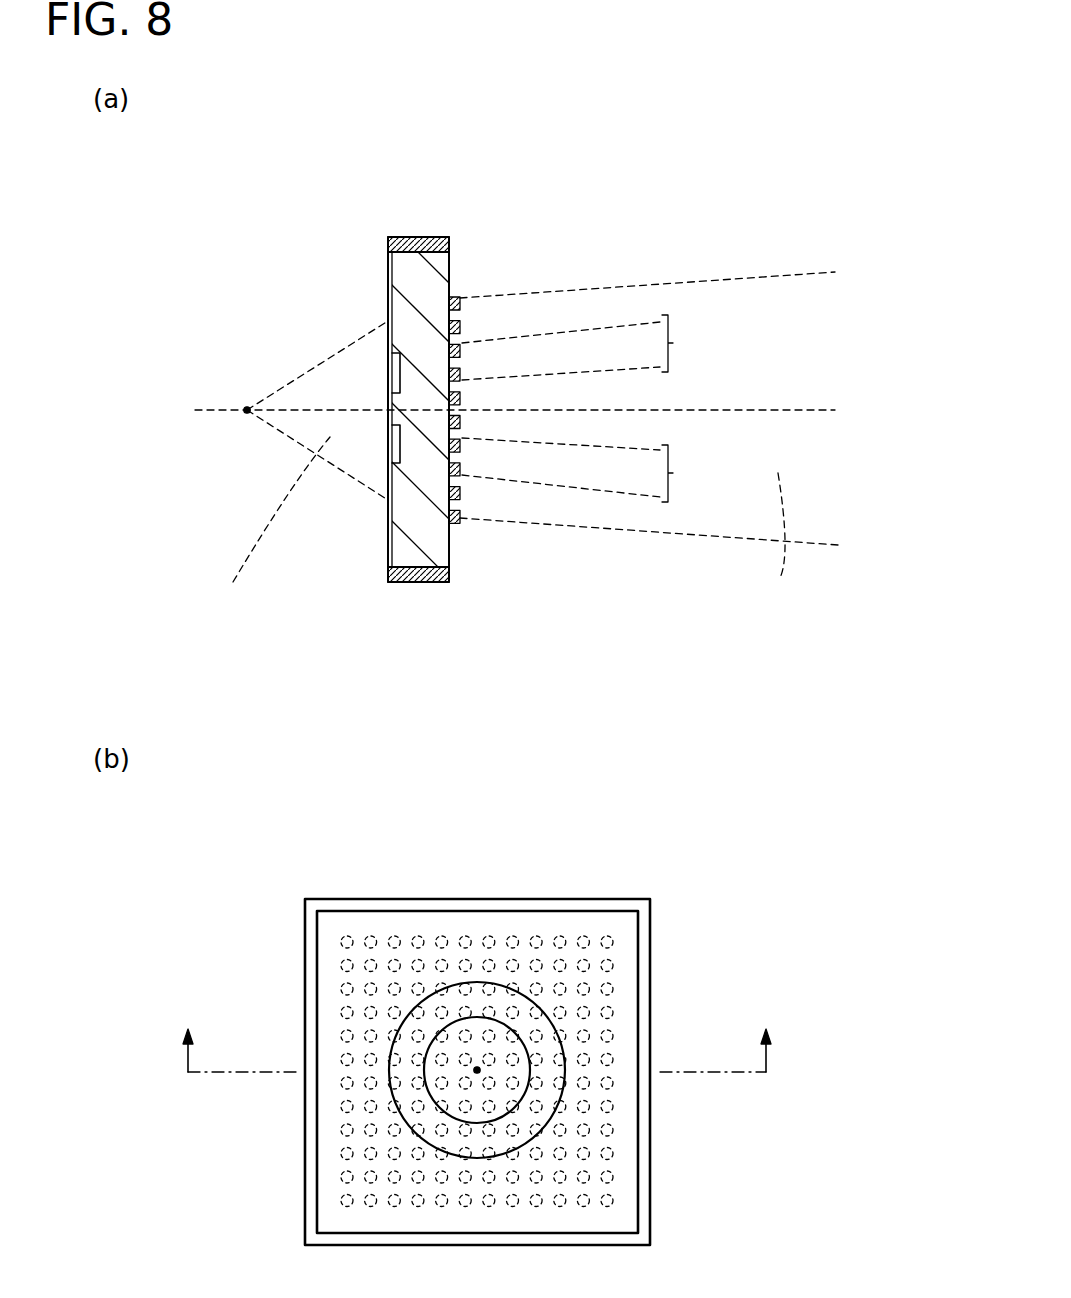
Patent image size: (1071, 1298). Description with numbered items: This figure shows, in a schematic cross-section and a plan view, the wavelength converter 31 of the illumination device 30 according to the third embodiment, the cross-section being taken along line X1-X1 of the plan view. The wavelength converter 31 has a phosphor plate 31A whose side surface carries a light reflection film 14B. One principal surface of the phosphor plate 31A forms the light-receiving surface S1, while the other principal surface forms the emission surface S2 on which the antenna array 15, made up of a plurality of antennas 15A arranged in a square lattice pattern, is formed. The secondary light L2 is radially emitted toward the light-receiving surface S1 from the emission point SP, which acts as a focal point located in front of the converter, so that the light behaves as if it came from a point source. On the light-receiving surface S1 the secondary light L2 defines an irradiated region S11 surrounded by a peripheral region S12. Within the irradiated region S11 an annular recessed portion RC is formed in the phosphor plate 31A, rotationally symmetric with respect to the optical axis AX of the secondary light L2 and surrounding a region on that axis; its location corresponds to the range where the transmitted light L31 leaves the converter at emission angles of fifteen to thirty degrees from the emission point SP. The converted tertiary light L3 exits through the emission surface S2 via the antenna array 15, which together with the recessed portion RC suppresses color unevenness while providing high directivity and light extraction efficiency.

The illumination device 30 is at (258, 181).
The wavelength converter 31 is at (282, 180).
The light reflection film 14B is at (388, 242).
The phosphor plate 31A is at (388, 262).
The antenna 15A is at (460, 300).
The antenna array 15 is at (536, 360).
The peripheral region S12 is at (377, 252).
The irradiated region S11 is at (377, 320).
The emission point SP is at (247, 410).
The recessed portion RC is at (395, 373).
The optical axis AX is at (535, 410).
The transmitted light L31 is at (673, 473).
The tertiary light L3 is at (649, 442).
The secondary light L2 is at (270, 527).
The light-receiving surface S1 is at (388, 547).
The emission surface S2 is at (449, 545).
The line X1- X1 is at (478, 1050).